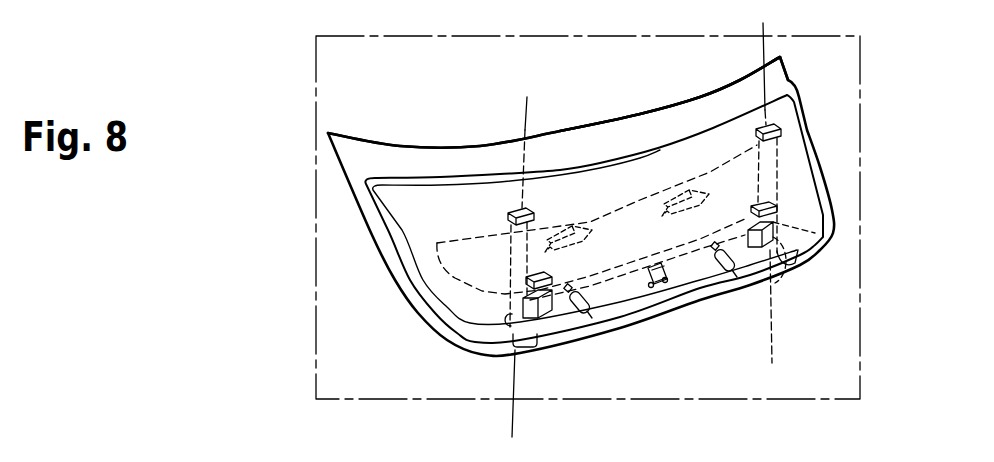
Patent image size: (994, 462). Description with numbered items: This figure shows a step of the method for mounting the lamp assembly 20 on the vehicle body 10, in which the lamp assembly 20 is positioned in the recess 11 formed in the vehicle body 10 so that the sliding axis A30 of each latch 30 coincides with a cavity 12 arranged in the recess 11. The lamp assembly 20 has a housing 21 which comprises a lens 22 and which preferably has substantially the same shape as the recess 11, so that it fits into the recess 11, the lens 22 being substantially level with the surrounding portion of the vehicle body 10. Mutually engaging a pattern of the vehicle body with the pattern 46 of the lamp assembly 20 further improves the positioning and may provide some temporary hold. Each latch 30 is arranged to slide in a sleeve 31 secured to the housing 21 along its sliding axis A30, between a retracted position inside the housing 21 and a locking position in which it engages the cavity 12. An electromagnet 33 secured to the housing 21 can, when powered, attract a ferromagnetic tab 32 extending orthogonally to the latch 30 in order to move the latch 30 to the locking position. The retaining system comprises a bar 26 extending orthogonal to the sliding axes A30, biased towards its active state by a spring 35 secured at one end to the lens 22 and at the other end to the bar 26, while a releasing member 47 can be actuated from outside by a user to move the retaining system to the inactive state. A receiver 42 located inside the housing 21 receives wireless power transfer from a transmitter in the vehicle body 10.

The vehicle body 10 is at (370, 85).
The recess 11 is at (807, 130).
The cavity 12 is at (527, 348).
The lamp assembly 20 is at (660, 146).
The housing 21 is at (420, 197).
The lens 22 is at (554, 102).
The bar 26 is at (617, 272).
The latch 30 is at (512, 300).
The sleeve 31 is at (767, 165).
The tab 32 is at (533, 272).
The electromagnet 33 is at (553, 320).
The spring 35 is at (590, 303).
The receiver 42 is at (733, 183).
The pattern of the lamp assembly 46 is at (582, 222).
The releasing member 47 is at (667, 275).
The sliding axis A30 is at (503, 378).